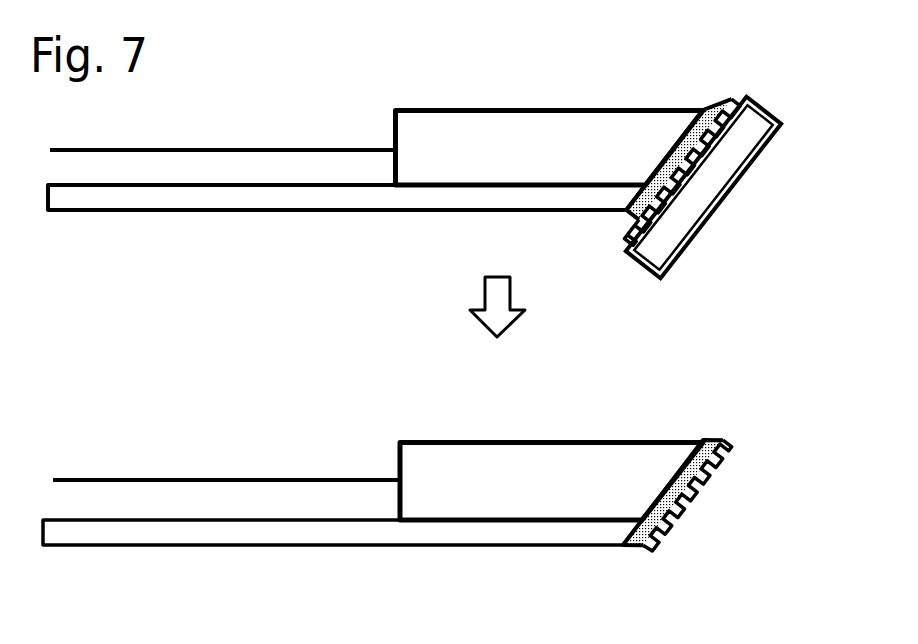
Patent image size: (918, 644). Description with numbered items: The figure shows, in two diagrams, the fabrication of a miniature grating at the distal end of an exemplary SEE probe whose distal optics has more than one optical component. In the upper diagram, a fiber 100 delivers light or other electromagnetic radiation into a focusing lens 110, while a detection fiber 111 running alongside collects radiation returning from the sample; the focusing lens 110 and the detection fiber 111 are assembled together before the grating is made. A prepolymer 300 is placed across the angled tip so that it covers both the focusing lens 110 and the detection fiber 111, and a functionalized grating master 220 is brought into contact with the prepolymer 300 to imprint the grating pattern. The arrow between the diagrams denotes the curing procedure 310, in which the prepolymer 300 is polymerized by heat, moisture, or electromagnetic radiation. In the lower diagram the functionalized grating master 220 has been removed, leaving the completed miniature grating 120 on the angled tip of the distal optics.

The fiber 100 is at (225, 286).
The focusing lens 110 is at (550, 289).
The detection fiber 111 is at (344, 390).
The miniature grating 120 is at (705, 495).
The functionalized grating master 220 is at (727, 188).
The prepolymer 300 is at (687, 152).
The procedure 310 is at (539, 307).